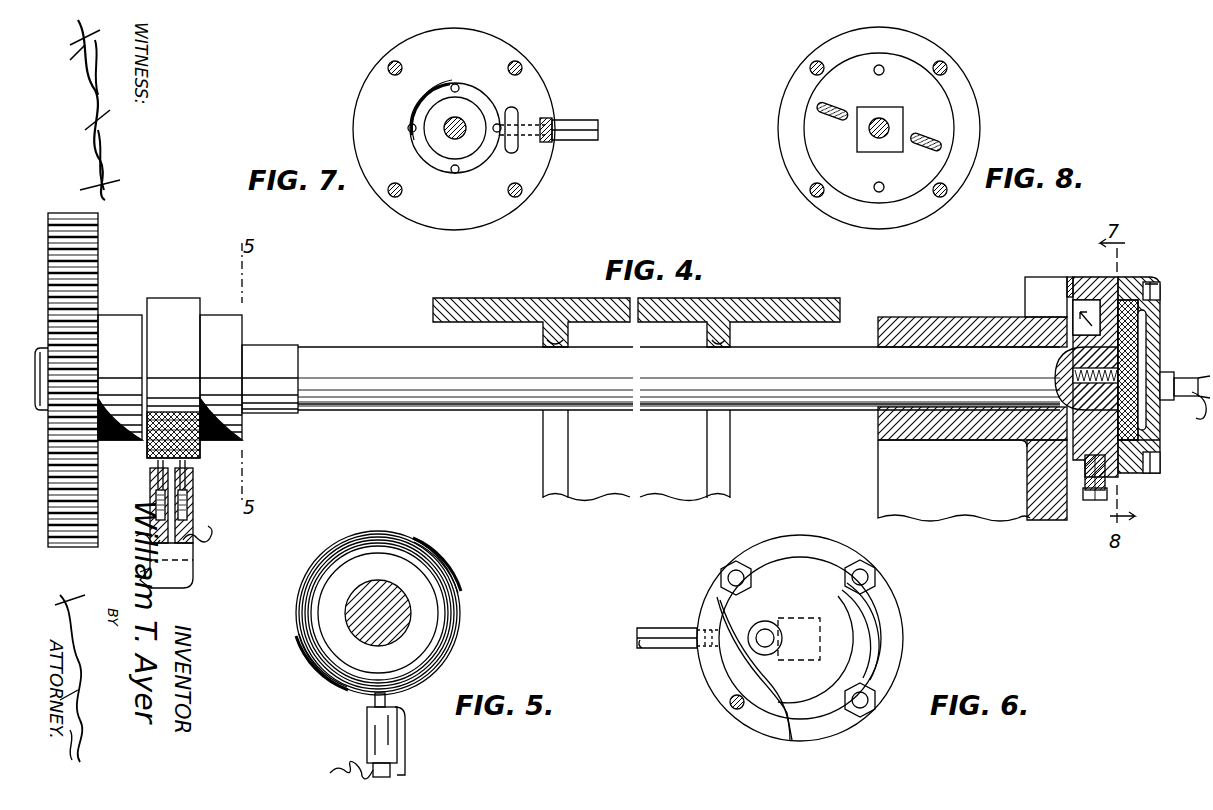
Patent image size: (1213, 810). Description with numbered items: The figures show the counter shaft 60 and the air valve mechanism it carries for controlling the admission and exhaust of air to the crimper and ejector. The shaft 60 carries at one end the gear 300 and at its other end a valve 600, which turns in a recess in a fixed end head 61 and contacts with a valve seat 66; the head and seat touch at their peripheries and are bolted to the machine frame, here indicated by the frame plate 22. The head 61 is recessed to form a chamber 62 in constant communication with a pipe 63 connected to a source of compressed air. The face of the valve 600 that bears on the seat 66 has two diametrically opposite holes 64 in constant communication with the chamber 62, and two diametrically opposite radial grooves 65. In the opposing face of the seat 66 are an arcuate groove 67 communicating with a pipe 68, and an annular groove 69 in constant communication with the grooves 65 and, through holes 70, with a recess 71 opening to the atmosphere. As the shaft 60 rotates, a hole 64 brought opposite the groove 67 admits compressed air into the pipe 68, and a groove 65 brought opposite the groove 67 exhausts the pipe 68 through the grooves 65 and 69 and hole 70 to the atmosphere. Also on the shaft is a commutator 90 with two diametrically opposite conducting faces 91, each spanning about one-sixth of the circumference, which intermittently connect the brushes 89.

In FIG. 4, the frame plate 22 is at (518, 298).
In FIG. 4, the shaft 60 is at (373, 347).
In FIG. 7, the shaft 60 is at (472, 110).
In FIG. 5, the shaft 60 is at (405, 620).
In FIG. 4, the end head 61 is at (1140, 277).
In FIG. 8, the end head 61 is at (792, 88).
In FIG. 6, the end head 61 is at (815, 732).
In FIG. 4, the chamber 62 is at (1160, 440).
In FIG. 4, the pipe 63 is at (1185, 378).
In FIG. 6, the pipe 63 is at (755, 632).
In FIG. 4, the holes 64 is at (1160, 292).
In FIG. 8, the holes 64 is at (883, 66).
In FIG. 4, the radial grooves 65 is at (1160, 468).
In FIG. 8, the radial grooves 65 is at (835, 112).
In FIG. 4, the valve seat 66 is at (1095, 277).
In FIG. 7, the valve seat 66 is at (365, 82).
In FIG. 6, the valve seat 66 is at (770, 732).
In FIG. 4, the arcuate groove 67 is at (1099, 375).
In FIG. 7, the arcuate groove 67 is at (518, 110).
In FIG. 4, the pipe 68 is at (1093, 500).
In FIG. 7, the pipe 68 is at (580, 122).
In FIG. 6, the pipe 68 is at (660, 650).
In FIG. 4, the annular groove 69 is at (1145, 375).
In FIG. 7, the annular groove 69 is at (472, 88).
In FIG. 7, the holes 70 is at (420, 110).
In FIG. 4, the recess 71 is at (1070, 277).
In FIG. 4, the brushes 89 is at (193, 472).
In FIG. 5, the brushes 89 is at (375, 702).
In FIG. 4, the commutator 90 is at (178, 298).
In FIG. 5, the commutator 90 is at (370, 531).
In FIG. 4, the conducting faces 91 is at (147, 443).
In FIG. 5, the conducting faces 91 is at (440, 562).
In FIG. 4, the gear 300 is at (98, 257).
In FIG. 4, the valve 600 is at (1132, 340).
In FIG. 8, the valve 600 is at (810, 142).
In FIG. 6, the valve 600 is at (745, 670).